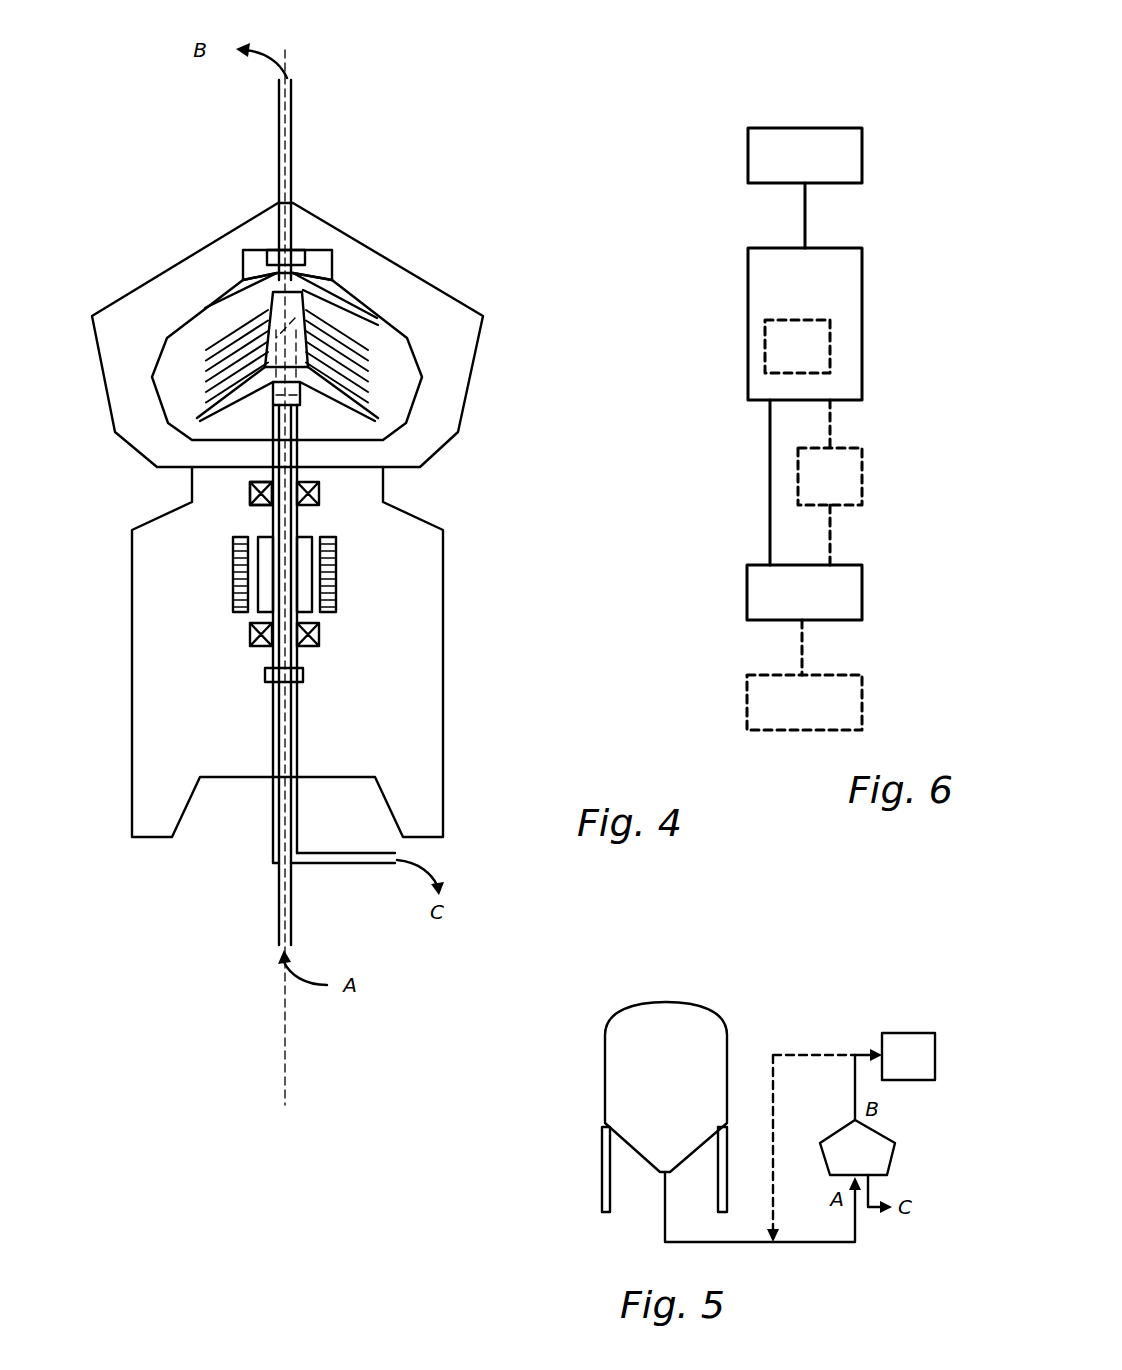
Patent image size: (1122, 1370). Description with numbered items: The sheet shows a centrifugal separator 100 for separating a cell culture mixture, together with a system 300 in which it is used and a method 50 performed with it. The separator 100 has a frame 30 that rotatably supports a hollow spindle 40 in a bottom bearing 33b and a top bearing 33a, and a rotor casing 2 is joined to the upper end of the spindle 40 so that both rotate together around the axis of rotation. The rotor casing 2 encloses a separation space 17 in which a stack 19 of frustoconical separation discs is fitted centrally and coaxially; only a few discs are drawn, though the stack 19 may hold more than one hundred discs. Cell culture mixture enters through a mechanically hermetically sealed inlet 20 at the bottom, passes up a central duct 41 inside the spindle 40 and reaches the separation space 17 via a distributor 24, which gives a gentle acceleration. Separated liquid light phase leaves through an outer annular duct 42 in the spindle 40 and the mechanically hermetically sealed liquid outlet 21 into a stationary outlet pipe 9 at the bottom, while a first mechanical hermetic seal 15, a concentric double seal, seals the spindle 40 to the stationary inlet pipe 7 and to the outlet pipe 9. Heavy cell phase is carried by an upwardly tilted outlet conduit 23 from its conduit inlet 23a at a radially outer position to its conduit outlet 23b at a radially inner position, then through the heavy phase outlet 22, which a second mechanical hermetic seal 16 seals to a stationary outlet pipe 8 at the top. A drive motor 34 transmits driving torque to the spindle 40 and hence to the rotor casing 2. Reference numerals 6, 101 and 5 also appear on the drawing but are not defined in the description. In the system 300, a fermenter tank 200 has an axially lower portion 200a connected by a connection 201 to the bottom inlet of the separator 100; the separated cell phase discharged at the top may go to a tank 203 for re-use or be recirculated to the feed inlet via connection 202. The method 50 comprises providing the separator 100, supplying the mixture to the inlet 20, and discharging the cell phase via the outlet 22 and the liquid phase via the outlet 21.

In FIG. 4, the centrifugal separator 100 is at (143, 172).
In FIG. 5, the centrifugal separator 100 is at (857, 1147).
In FIG. 4, the frame 30 is at (160, 247).
In FIG. 4, the inlet flow 6 is at (195, 277).
In FIG. 4, the mixing chamber 101 is at (140, 343).
In FIG. 4, the rotor casing 2 is at (153, 366).
In FIG. 4, the flow path 5 is at (240, 452).
In FIG. 4, the heavy phase outlet 22 is at (283, 263).
In FIG. 4, the second mechanical hermetic seal 16 is at (303, 250).
In FIG. 4, the stationary outlet pipe 8 is at (292, 165).
In FIG. 4, the mechanically hermetically sealed liquid outlet 21 is at (383, 317).
In FIG. 4, the outlet conduit 23 is at (373, 320).
In FIG. 4, the conduit inlet 23a is at (380, 312).
In FIG. 4, the conduit outlet 23b is at (293, 268).
In FIG. 4, the separation space 17 is at (295, 343).
In FIG. 4, the stack of separation discs 19 is at (355, 376).
In FIG. 4, the distributor 24 is at (295, 396).
In FIG. 4, the mechanically hermetically sealed inlet 20 is at (372, 440).
In FIG. 4, the hollow spindle 40 is at (297, 522).
In FIG. 4, the stationary inlet pipe 7 is at (283, 927).
In FIG. 4, the stationary outlet pipe 9 is at (347, 865).
In FIG. 4, the outer annular duct 42 is at (297, 512).
In FIG. 4, the top bearing 33a is at (248, 496).
In FIG. 4, the bottom bearing 33b is at (248, 634).
In FIG. 4, the central duct 41 is at (337, 547).
In FIG. 4, the drive motor 34 is at (358, 568).
In FIG. 4, the first mechanical hermetic seal 15 is at (303, 672).
In FIG. 6, the method 50 is at (798, 78).
In FIG. 5, the system 300 is at (748, 988).
In FIG. 5, the fermenter tank 200 is at (664, 1107).
In FIG. 5, the axially lower portion 200a is at (638, 1170).
In FIG. 5, the connection 201 is at (788, 1243).
In FIG. 5, the connection 202 is at (808, 1055).
In FIG. 5, the tank 203 is at (908, 1056).